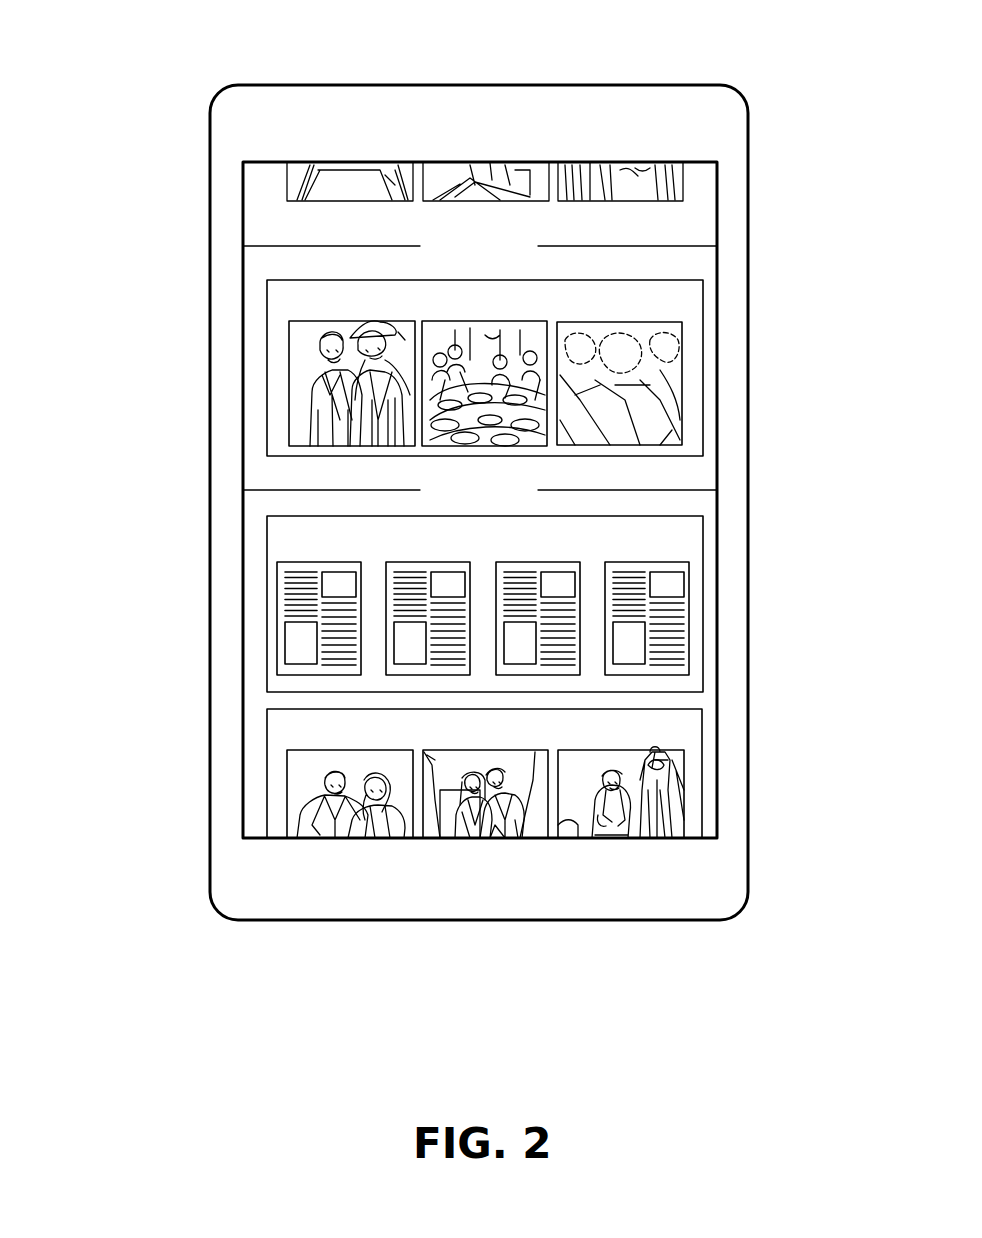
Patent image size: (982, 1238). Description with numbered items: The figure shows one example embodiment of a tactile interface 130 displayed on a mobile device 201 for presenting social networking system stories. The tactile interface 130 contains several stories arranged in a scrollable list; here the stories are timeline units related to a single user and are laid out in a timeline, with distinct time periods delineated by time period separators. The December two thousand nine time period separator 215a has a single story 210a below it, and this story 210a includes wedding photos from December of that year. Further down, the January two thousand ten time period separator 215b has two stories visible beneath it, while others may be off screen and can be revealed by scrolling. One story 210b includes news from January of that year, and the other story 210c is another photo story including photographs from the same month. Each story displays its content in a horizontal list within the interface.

The mobile device 201 is at (248, 82).
The tactile interface 130 is at (717, 162).
The December 2009 time period separator 215a is at (615, 247).
The January 2010 time period separator 215b is at (652, 487).
The story 210a is at (267, 353).
The story 210b is at (267, 553).
The story 210c is at (267, 760).